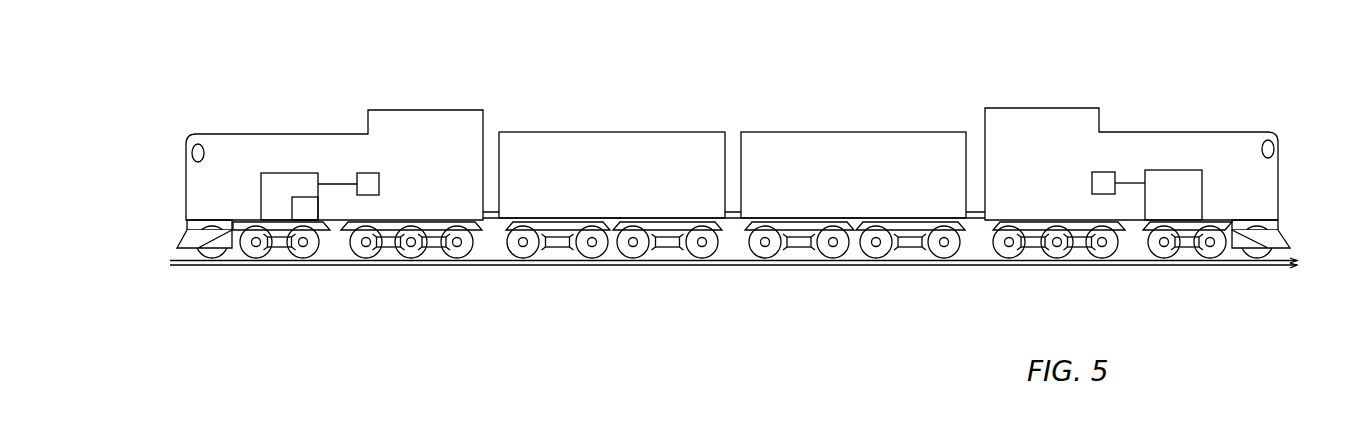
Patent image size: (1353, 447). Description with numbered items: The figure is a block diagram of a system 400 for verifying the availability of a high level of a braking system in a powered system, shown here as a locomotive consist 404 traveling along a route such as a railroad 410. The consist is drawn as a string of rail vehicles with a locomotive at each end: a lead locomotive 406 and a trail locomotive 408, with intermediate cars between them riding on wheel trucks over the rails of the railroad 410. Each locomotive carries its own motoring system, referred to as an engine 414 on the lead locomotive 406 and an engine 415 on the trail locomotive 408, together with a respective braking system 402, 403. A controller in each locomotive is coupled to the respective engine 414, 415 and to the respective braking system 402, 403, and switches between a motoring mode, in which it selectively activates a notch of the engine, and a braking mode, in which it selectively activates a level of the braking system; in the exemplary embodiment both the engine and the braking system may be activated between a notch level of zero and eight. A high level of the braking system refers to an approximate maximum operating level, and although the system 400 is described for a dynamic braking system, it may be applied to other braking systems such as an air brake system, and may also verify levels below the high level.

The system 400 is at (560, 65).
The braking system 402 is at (1293, 236).
The braking system 403 is at (172, 237).
The locomotive consist 404 is at (670, 122).
The lead locomotive 406 is at (1120, 161).
The trail locomotive 408 is at (330, 162).
The railroad 410 is at (845, 264).
The engine 414 is at (1108, 172).
The engine 415 is at (336, 148).